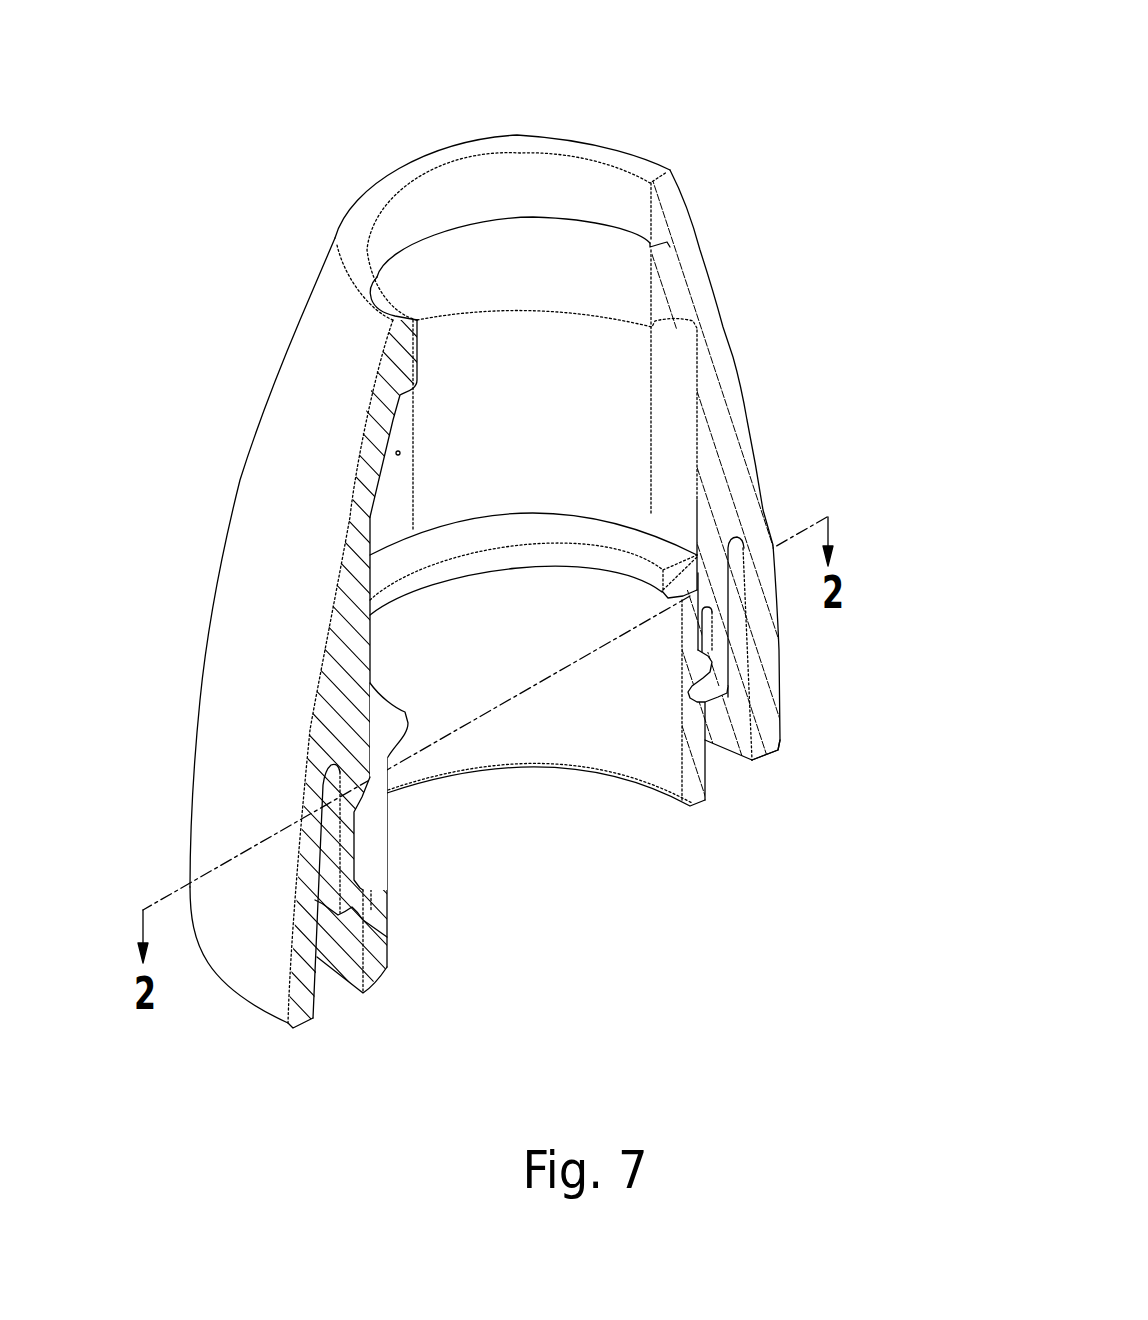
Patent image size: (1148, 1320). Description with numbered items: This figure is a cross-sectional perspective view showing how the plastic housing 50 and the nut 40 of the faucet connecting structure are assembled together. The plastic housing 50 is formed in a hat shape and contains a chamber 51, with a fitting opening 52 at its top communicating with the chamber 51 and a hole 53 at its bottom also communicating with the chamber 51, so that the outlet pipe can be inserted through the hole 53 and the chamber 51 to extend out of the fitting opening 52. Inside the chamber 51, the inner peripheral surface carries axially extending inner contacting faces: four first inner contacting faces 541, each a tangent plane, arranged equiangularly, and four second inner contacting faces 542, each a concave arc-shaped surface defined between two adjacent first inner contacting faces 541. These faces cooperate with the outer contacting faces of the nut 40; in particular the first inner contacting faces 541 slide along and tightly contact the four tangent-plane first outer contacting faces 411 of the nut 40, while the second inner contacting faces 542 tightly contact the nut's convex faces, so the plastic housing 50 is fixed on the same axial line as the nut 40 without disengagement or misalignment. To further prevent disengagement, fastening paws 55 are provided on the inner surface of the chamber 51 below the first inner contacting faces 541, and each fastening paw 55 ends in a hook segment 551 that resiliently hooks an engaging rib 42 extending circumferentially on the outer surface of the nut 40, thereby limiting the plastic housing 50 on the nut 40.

The nut 40 is at (620, 790).
The first outer contacting face 411 is at (730, 540).
The engaging rib 42 is at (713, 665).
The plastic housing 50 is at (740, 354).
The chamber 51 is at (620, 462).
The fitting opening 52 is at (591, 176).
The hole 53 is at (718, 767).
The first inner contacting face 541 is at (677, 405).
The second inner contacting face 542 is at (603, 357).
The fastening paw 55 is at (722, 633).
The hook segment 551 is at (705, 702).